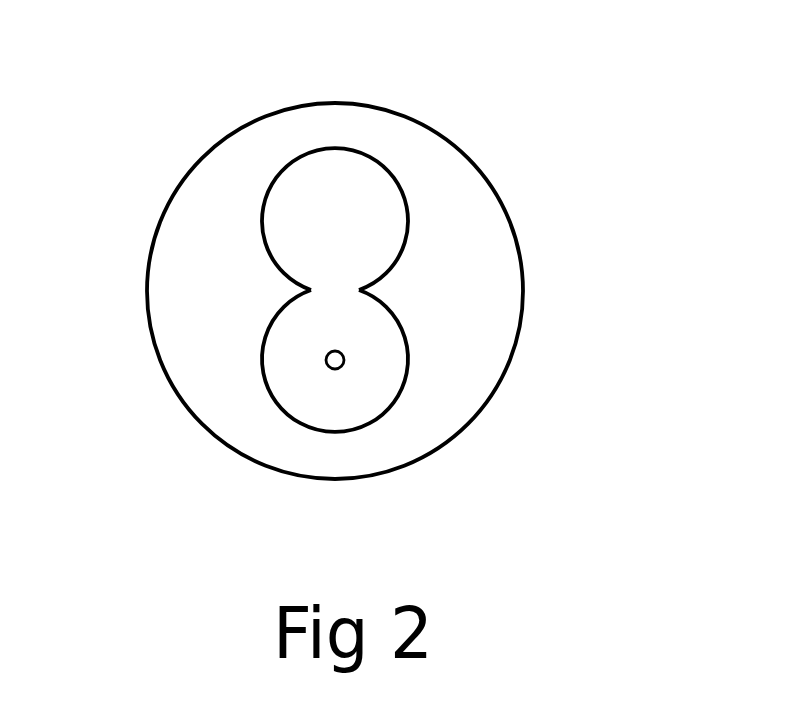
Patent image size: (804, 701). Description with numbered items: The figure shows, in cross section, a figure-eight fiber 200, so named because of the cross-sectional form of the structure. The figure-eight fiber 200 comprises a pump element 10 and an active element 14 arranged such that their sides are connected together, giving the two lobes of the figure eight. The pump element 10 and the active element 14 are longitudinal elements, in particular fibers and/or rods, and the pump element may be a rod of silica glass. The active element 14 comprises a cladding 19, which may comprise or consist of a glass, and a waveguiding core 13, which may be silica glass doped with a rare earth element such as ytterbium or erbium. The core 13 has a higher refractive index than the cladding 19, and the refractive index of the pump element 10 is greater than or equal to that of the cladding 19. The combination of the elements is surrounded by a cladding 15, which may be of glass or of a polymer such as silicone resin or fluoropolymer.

The figure-8-fiber 200 is at (576, 80).
The cladding 15 is at (500, 288).
The pump element 10 is at (263, 242).
The active element 14 is at (263, 378).
The cladding 19 is at (378, 376).
The core 13 is at (342, 368).